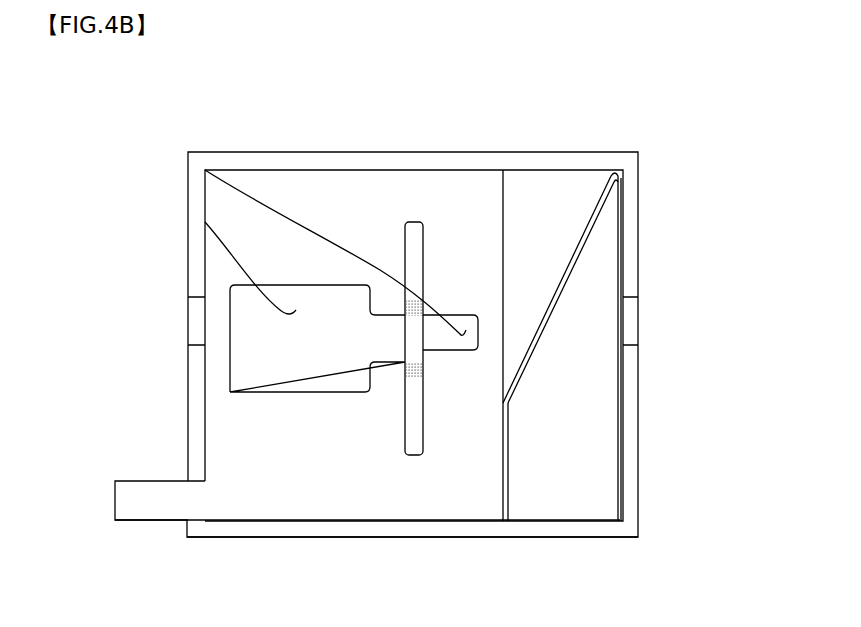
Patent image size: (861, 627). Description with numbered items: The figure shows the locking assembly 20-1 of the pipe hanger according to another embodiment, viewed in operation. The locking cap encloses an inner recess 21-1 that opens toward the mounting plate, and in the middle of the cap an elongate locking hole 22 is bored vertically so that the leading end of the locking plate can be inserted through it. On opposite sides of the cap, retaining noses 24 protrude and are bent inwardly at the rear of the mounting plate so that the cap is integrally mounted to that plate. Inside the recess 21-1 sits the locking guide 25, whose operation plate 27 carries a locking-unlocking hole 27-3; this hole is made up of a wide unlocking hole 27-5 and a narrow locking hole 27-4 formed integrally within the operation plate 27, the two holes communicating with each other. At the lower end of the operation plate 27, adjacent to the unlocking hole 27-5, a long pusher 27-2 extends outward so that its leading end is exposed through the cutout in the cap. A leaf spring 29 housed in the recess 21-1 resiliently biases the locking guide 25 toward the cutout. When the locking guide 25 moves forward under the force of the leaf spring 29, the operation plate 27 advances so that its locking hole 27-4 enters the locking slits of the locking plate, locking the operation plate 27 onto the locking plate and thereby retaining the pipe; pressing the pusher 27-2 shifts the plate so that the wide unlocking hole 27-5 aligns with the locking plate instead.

The locking assembly 20-1 is at (697, 122).
The inner recess 21-1 is at (555, 205).
The locking hole 22 is at (405, 242).
The retaining noses 24 is at (190, 330).
The locking guide 25 is at (394, 556).
The operation plate 27 is at (428, 190).
The pusher 27-2 is at (131, 481).
The locking-unlocking hole 27-3 is at (99, 149).
The locking hole 27-4 is at (205, 170).
The unlocking hole 27-5 is at (205, 222).
The leaf spring 29 is at (620, 443).